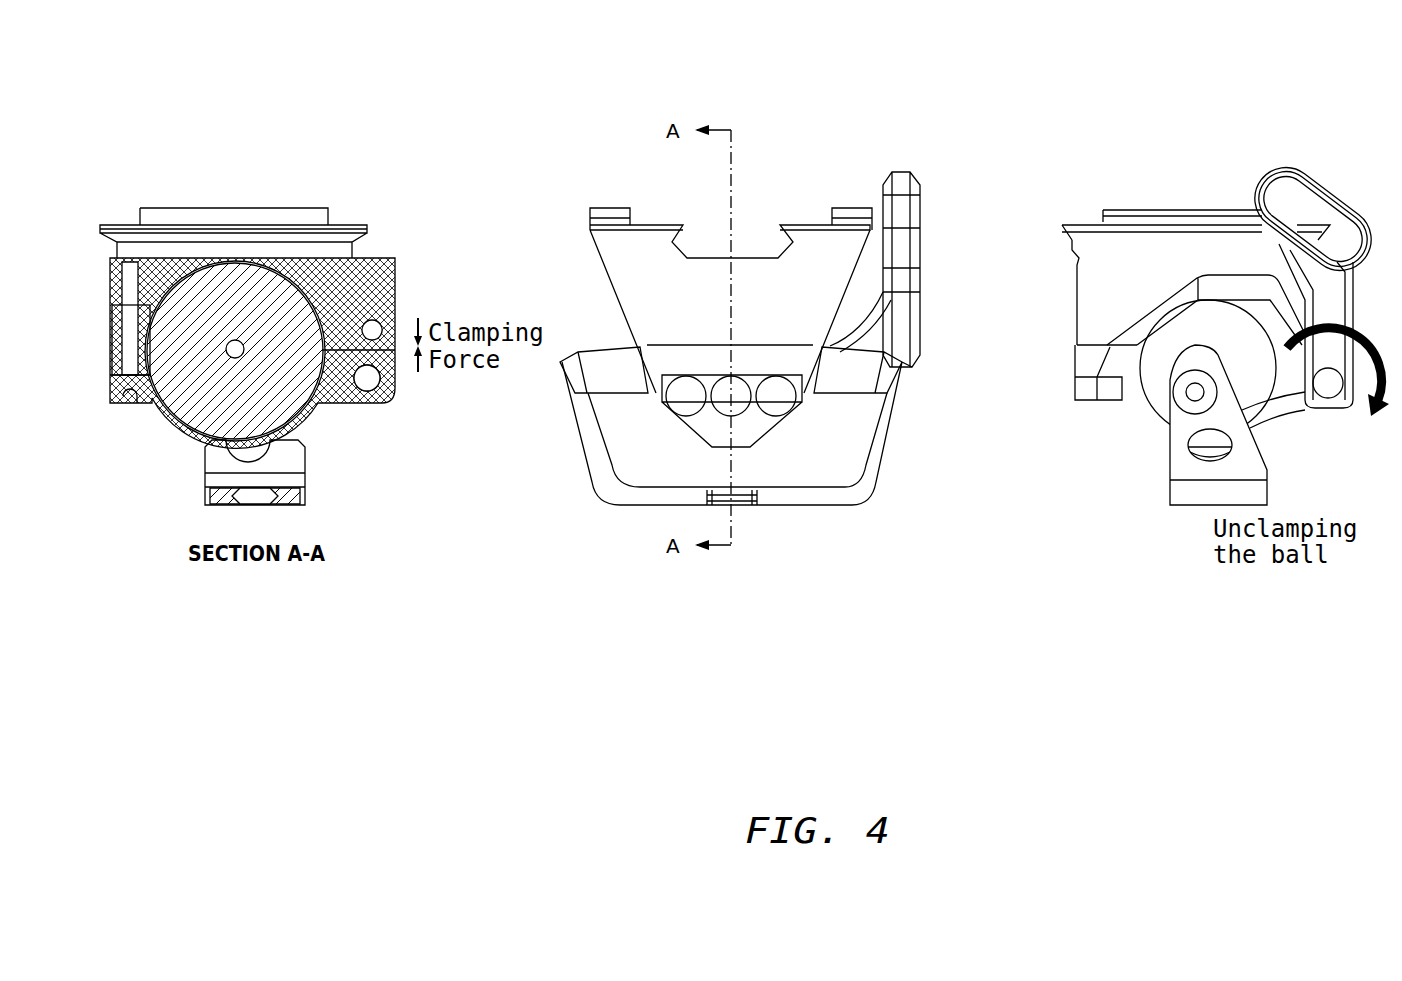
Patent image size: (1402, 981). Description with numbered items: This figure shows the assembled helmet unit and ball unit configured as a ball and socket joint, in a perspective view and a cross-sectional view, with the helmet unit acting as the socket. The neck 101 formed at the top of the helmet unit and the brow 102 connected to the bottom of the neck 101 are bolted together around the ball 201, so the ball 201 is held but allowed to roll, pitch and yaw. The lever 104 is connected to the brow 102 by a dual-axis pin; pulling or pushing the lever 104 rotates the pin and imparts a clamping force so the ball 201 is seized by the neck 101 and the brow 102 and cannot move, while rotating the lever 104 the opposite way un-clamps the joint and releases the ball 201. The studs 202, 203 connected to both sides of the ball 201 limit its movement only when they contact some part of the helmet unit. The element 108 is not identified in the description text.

The neck 101 is at (307, 430).
The brow 102 is at (393, 302).
The lever 104 is at (367, 380).
The top mounting plate 108 is at (362, 233).
The ball 201 is at (238, 292).
The stud 202 is at (850, 502).
The stud 203 is at (835, 372).